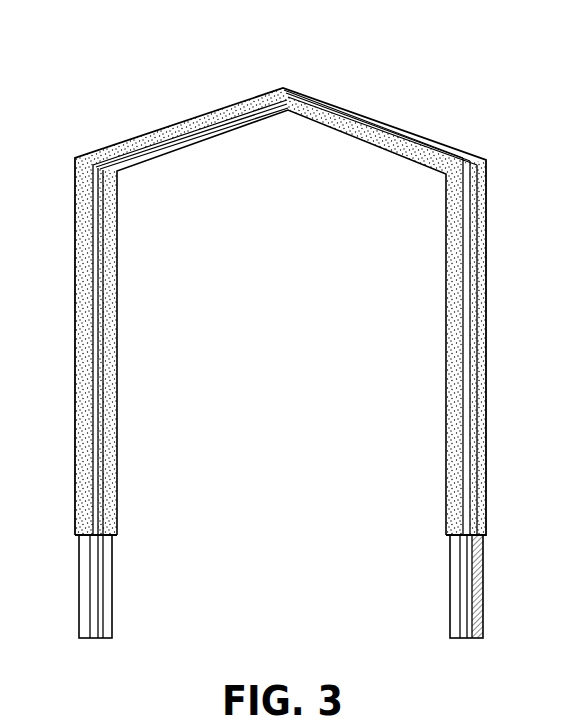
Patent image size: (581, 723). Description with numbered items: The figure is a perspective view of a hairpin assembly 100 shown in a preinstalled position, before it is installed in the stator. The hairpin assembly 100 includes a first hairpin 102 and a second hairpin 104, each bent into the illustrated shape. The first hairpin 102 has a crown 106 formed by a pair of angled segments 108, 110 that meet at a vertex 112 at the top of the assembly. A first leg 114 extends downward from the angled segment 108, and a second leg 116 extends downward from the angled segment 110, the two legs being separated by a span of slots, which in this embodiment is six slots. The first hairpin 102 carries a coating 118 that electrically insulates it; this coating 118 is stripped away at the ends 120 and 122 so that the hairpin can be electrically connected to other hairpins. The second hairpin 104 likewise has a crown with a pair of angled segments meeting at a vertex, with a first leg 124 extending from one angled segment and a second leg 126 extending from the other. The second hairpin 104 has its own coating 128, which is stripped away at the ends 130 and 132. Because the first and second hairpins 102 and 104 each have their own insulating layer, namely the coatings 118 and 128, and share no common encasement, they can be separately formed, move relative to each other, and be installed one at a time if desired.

The hairpin assembly 100 is at (428, 70).
The first hairpin 102 is at (232, 114).
The second hairpin 104 is at (480, 174).
The crown 106 is at (195, 90).
The angled segment 108 is at (183, 130).
The angled segment 110 is at (400, 114).
The vertex 112 is at (282, 88).
The first leg 114 is at (73, 255).
The second leg 116 is at (452, 270).
The coating 118 is at (83, 389).
The end 120 is at (83, 577).
The end 122 is at (453, 580).
The first leg 124 is at (112, 313).
The second leg 126 is at (480, 308).
The coating 128 is at (480, 430).
The end 130 is at (113, 587).
The end 132 is at (482, 607).